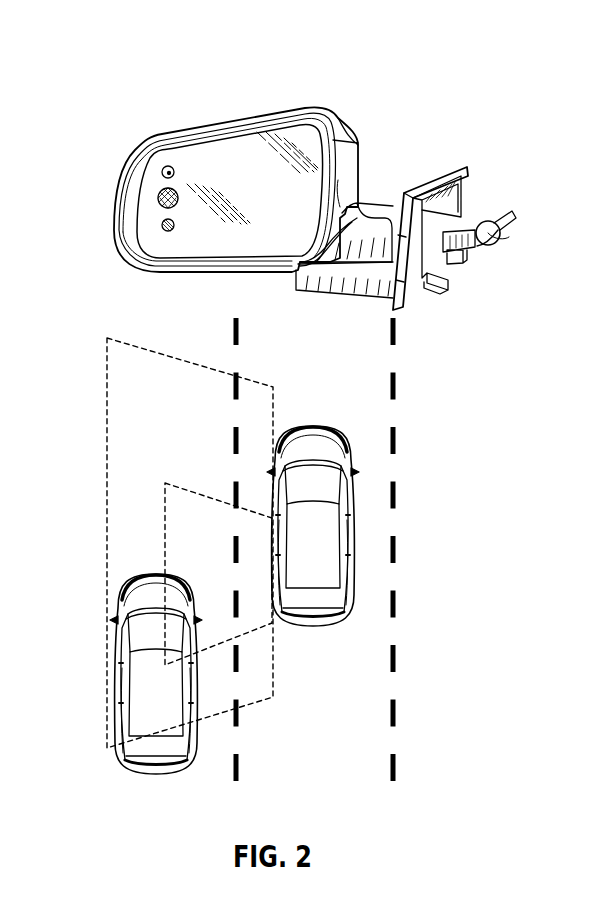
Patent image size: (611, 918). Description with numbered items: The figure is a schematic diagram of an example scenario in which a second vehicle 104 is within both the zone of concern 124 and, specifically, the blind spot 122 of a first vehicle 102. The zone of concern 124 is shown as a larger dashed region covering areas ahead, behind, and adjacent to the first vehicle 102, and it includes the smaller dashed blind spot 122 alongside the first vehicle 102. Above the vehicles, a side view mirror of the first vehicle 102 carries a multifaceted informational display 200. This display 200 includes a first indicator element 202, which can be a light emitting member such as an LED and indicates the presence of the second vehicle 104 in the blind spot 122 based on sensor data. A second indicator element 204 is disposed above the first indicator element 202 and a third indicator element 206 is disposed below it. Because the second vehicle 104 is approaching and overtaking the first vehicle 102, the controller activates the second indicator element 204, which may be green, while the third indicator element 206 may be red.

The multifaceted informational display 200 is at (233, 157).
The first indicator element 202 is at (160, 190).
The second indicator element 204 is at (162, 167).
The third indicator element 206 is at (161, 220).
The first vehicle 102 is at (347, 473).
The second vehicle 104 is at (148, 709).
The blind spot 122 is at (163, 547).
The zone of concern 124 is at (132, 345).